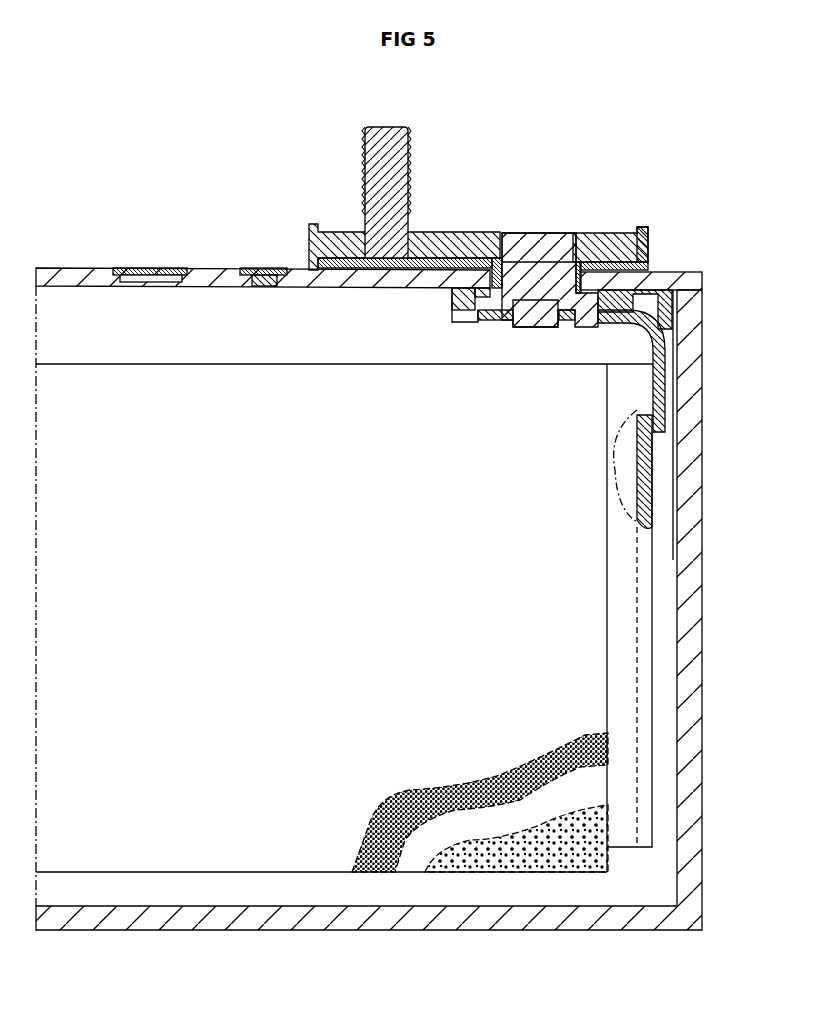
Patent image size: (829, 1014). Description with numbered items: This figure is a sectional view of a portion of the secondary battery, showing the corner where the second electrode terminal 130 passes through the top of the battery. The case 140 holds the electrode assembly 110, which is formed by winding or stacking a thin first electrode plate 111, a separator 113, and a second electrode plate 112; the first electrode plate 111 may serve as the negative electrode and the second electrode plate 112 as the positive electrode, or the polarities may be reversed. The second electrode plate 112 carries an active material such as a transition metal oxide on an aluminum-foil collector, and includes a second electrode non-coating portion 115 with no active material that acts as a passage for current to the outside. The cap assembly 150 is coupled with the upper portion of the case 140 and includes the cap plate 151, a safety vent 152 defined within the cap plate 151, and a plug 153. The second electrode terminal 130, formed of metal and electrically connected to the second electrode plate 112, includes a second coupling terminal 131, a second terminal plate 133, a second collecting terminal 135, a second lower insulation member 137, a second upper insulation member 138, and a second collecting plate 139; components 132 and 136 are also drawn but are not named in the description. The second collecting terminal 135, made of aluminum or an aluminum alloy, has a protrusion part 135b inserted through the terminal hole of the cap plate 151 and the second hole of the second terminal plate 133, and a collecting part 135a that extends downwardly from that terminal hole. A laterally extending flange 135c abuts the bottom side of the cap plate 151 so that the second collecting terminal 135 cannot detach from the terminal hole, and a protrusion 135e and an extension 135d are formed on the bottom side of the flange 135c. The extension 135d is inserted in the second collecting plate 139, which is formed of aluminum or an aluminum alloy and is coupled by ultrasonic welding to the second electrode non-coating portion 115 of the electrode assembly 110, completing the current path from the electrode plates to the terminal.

The electrode assembly 110 is at (352, 675).
The first electrode plate 111 is at (558, 857).
The second electrode plate 112 is at (367, 858).
The separator 113 is at (403, 857).
The second electrode non-coating portion 115 is at (620, 830).
The second electrode terminal 130 is at (405, 172).
The second coupling terminal 131 is at (376, 168).
The bolt shank 132 is at (366, 182).
The second terminal plate 133 is at (436, 234).
The second collecting terminal 135 is at (524, 274).
The collecting part 135a is at (540, 290).
The protrusion part 135b is at (558, 243).
The laterally extending flange 135c is at (488, 306).
The extension 135d is at (585, 325).
The protrusion 135e is at (537, 308).
The upper insulating plate 136 is at (602, 262).
The second lower insulation member 137 is at (665, 312).
The second upper insulation member 138 is at (650, 240).
The second collecting plate 139 is at (657, 383).
The case 140 is at (705, 606).
The cap assembly 150 is at (369, 213).
The cap plate 151 is at (53, 270).
The safety vent 152 is at (148, 270).
The plug 153 is at (260, 270).